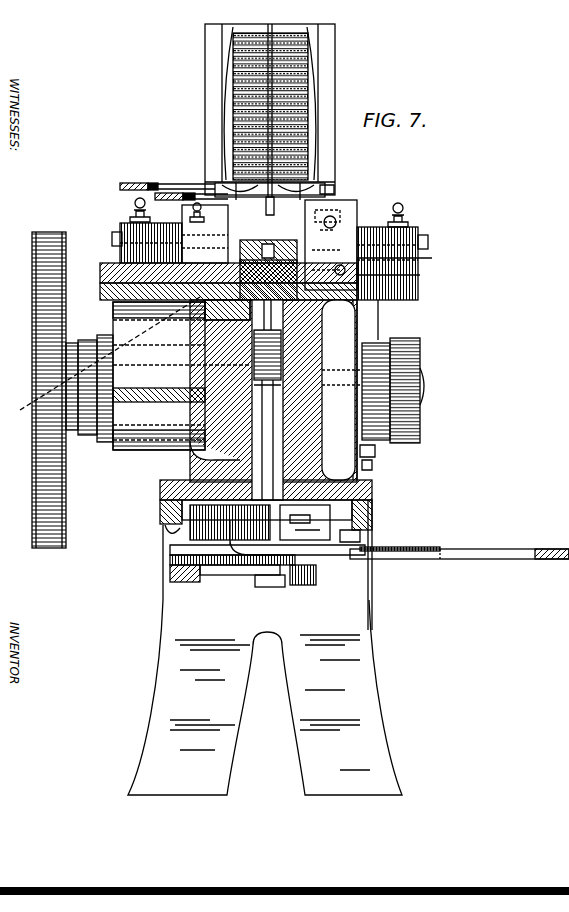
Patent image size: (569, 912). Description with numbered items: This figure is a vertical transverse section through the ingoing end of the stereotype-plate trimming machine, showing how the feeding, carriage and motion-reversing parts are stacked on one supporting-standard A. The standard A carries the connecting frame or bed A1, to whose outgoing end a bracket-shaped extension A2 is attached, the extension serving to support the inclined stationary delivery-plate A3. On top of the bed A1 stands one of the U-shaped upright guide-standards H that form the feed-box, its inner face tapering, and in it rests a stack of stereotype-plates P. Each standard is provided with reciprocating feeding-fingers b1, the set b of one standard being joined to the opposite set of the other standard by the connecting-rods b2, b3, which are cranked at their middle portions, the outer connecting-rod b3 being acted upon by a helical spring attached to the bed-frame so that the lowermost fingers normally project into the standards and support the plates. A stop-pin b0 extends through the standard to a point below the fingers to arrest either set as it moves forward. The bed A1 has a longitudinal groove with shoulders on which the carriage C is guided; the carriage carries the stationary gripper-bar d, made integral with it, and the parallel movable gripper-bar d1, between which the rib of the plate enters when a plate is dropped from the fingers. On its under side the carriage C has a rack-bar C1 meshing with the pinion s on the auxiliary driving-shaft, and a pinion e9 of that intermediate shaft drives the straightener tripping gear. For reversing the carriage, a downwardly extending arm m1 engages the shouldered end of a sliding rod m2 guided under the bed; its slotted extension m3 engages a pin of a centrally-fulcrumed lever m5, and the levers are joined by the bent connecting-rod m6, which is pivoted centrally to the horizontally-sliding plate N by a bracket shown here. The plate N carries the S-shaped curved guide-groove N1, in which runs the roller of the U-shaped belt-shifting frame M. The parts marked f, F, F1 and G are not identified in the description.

The U-shaped upright guide-standard H is at (279, 109).
The stereotype-plate P is at (262, 35).
The set of feeding-fingers b is at (318, 188).
The feeding-fingers b1 is at (322, 196).
The connecting-rod b2 is at (168, 192).
The outer connecting-rod b3 is at (136, 182).
The stop-pin b0 is at (281, 210).
The knob f is at (257, 212).
The valve body F is at (433, 243).
The valve nut F1 is at (418, 236).
The stationary gripper-bar d is at (216, 234).
The movable gripper-bar d1 is at (345, 244).
The carriage C is at (380, 285).
The rack-bar C1 is at (341, 390).
The supporting-standard A is at (386, 672).
The connecting frame or bed A1 is at (400, 496).
The bracket-shaped extension A2 is at (340, 460).
The inclined stationary delivery-plate A3 is at (30, 395).
The pinion s is at (254, 400).
The pinion e9 is at (420, 378).
The arm m1 is at (353, 444).
The sliding rod m2 is at (300, 555).
The slotted extension m3 is at (437, 553).
The centrally-fulcrumed lever m5 is at (228, 572).
The bent connecting-rod m6 is at (190, 585).
The belt-shifting frame M is at (493, 550).
The horizontally-sliding plate N is at (355, 515).
The curved guide-groove N1 is at (380, 546).
The guide G is at (564, 312).